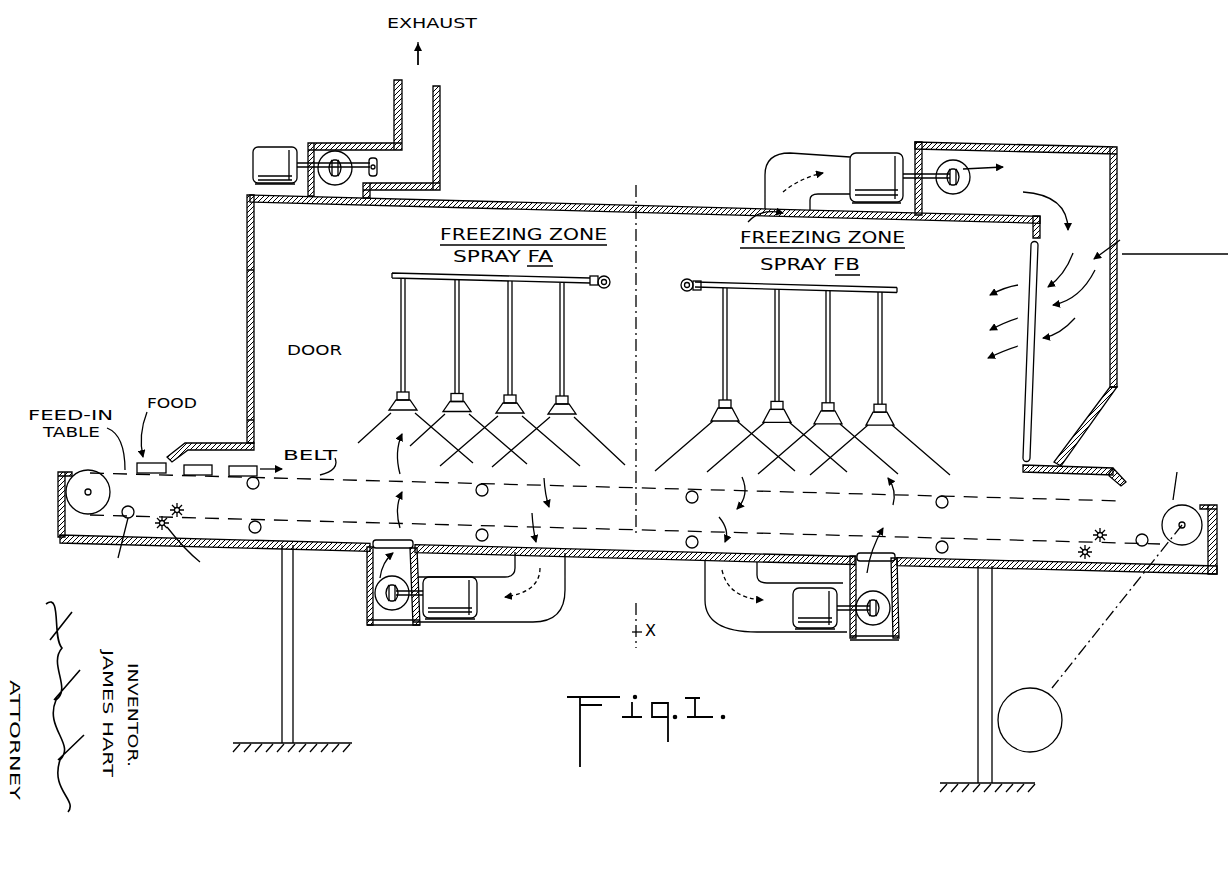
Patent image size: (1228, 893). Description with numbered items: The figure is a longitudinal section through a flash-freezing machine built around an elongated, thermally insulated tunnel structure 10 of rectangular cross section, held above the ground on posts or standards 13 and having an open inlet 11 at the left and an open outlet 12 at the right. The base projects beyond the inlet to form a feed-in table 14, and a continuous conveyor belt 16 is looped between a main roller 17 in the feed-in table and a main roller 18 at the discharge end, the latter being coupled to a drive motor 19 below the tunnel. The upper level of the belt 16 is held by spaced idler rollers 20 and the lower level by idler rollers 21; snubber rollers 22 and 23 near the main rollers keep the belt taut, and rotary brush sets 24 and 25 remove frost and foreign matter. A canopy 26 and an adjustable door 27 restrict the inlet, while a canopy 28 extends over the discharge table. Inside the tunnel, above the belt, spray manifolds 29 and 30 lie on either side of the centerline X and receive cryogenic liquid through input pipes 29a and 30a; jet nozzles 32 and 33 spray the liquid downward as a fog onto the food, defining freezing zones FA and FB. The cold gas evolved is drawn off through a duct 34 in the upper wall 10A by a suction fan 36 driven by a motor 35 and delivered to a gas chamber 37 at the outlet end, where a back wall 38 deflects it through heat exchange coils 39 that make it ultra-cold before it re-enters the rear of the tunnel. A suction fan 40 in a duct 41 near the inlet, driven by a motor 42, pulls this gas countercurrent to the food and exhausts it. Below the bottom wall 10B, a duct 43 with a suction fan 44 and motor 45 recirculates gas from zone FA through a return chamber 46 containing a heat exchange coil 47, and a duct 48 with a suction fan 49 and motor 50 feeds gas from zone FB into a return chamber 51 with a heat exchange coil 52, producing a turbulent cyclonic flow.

The tunnel structure 10 is at (676, 228).
The upper wall 10A is at (548, 204).
The bottom wall 10B is at (595, 556).
The inlet 11 is at (170, 458).
The outlet 12 is at (1110, 498).
The posts or standards 13 is at (288, 694).
The feed-in table 14 is at (64, 541).
The conveyor belt 16 is at (352, 477).
The main roller 17 is at (98, 472).
The main roller 18 is at (1203, 497).
The drive motor 19 is at (1050, 738).
The idler rollers 20 is at (260, 486).
The idler rollers 21 is at (262, 523).
The snubber roller 22 is at (130, 508).
The snubber roller 23 is at (1155, 527).
The rotary brush set 24 is at (180, 517).
The rotary brush set 25 is at (1095, 538).
The canopy 26 is at (247, 440).
The adjustable door 27 is at (256, 415).
The canopy 28 is at (1078, 465).
The spray manifold 29 is at (512, 285).
The input pipe 29a is at (606, 276).
The spray manifold 30 is at (733, 290).
The input pipe 30a is at (686, 278).
The jet nozzles 32 is at (405, 395).
The jet nozzles 33 is at (728, 398).
The ducts 34 is at (778, 163).
The motors 35 is at (860, 153).
The suction fans 36 is at (950, 160).
The gas chamber 37 is at (1092, 174).
The back wall 38 is at (1112, 296).
The heat exchange coils 39 is at (1110, 352).
The suction fan 40 is at (380, 168).
The duct 41 is at (322, 150).
The motor 42 is at (261, 150).
The duct 43 is at (526, 620).
The suction fan 44 is at (393, 620).
The motor 45 is at (450, 615).
The return chamber 46 is at (372, 625).
The heat exchange coil 47 is at (356, 564).
The duct 48 is at (727, 632).
The suction fan 49 is at (887, 620).
The motor 50 is at (812, 630).
The return chamber 51 is at (857, 641).
The heat exchange coil 52 is at (917, 574).